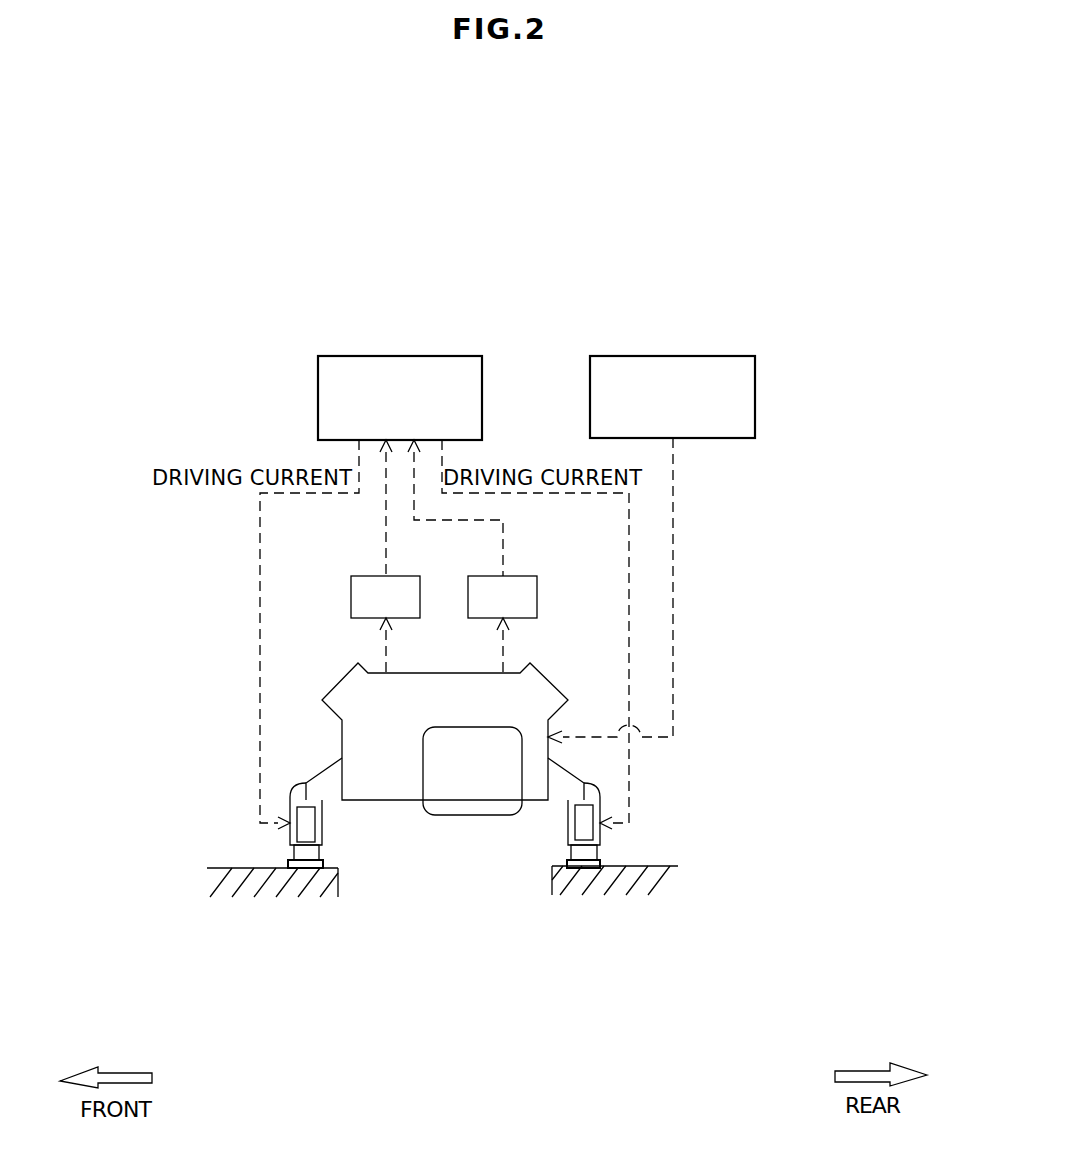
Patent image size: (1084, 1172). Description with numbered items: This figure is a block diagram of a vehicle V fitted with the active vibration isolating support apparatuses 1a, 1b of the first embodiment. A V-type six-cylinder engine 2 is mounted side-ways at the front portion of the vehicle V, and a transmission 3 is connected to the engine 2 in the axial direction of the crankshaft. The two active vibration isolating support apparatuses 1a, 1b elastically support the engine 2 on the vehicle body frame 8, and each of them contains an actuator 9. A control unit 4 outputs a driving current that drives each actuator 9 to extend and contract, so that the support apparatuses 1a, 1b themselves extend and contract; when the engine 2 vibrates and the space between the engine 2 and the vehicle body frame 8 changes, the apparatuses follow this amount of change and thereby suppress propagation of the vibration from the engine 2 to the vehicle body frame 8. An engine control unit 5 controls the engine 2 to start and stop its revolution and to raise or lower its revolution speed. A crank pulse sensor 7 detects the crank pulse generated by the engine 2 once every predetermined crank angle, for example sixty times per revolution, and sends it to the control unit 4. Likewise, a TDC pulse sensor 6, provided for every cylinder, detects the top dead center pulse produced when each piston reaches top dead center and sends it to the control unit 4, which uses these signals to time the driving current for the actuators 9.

The vehicle V is at (649, 283).
The active vibration isolating support apparatus 1a is at (303, 869).
The active vibration isolating support apparatus 1b is at (578, 867).
The engine 2 is at (342, 735).
The transmission 3 is at (467, 806).
The control unit 4 is at (424, 356).
The engine control unit 5 is at (697, 356).
The TDC pulse sensor 6 is at (351, 596).
The crank pulse sensor 7 is at (537, 596).
The vehicle body frame 8 is at (222, 868).
The actuator 9 is at (310, 828).